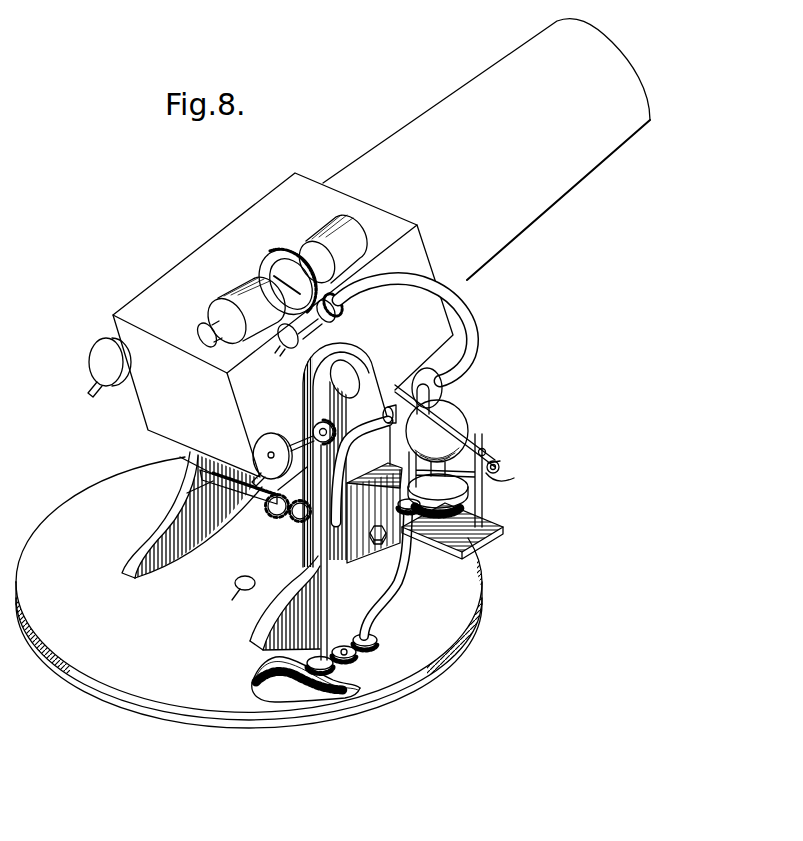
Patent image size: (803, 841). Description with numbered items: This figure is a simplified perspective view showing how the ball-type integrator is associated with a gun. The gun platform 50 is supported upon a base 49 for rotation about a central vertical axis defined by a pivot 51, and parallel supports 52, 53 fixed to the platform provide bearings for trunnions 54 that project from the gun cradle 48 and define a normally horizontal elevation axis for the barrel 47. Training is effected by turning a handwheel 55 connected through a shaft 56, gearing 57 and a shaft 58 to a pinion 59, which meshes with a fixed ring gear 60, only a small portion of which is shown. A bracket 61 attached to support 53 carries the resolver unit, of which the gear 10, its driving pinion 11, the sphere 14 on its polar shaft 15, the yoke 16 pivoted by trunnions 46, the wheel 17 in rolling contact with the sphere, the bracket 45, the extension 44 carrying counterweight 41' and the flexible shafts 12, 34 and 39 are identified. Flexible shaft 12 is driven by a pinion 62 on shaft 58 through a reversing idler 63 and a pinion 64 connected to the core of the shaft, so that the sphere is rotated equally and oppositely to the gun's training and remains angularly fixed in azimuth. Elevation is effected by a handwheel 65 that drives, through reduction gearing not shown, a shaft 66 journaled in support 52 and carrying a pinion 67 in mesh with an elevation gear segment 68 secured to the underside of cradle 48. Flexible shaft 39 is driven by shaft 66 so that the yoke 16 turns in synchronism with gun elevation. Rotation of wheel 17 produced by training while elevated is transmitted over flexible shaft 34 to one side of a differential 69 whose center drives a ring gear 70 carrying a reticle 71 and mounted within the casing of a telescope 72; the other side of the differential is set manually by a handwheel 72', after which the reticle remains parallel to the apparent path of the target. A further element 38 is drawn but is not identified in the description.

The gear 10 is at (470, 491).
The pinion 11 is at (420, 545).
The flexible shaft 12 is at (410, 566).
The sphere 14 is at (458, 413).
The shaft 15 is at (522, 467).
The yoke 16 is at (474, 438).
The wheel 17 is at (441, 388).
The flexible shaft 34 is at (484, 353).
The hose fitting 38 is at (386, 412).
The flexible shaft 39 is at (298, 524).
The counterweight 41' is at (529, 449).
The extension 44 is at (498, 461).
The bracket 45 is at (484, 505).
The trunnions 46 is at (484, 449).
The barrel 47 is at (507, 237).
The gun cradle 48 is at (188, 270).
The base 49 is at (353, 712).
The gun platform 50 is at (97, 675).
The pivot 51 is at (237, 590).
The support 52 is at (128, 562).
The support 53 is at (257, 640).
The trunnions 54 is at (354, 373).
The handwheel 55 is at (252, 453).
The shaft 56 is at (306, 433).
The gearing 57 is at (312, 420).
The shaft 58 is at (321, 565).
The pinion 59 is at (322, 690).
The ring gear 60 is at (285, 680).
The bracket 61 is at (496, 531).
The pinion 62 is at (336, 671).
The reversing idler 63 is at (358, 656).
The pinion 64 is at (376, 636).
The handwheel 65 is at (96, 362).
The shaft 66 is at (187, 493).
The pinion 67 is at (272, 520).
The elevation gear segment 68 is at (252, 482).
The differential 69 is at (341, 316).
The ring gear 70 is at (276, 262).
The reticle 71 is at (282, 281).
The telescope 72 is at (234, 313).
The handwheel 72' is at (277, 350).